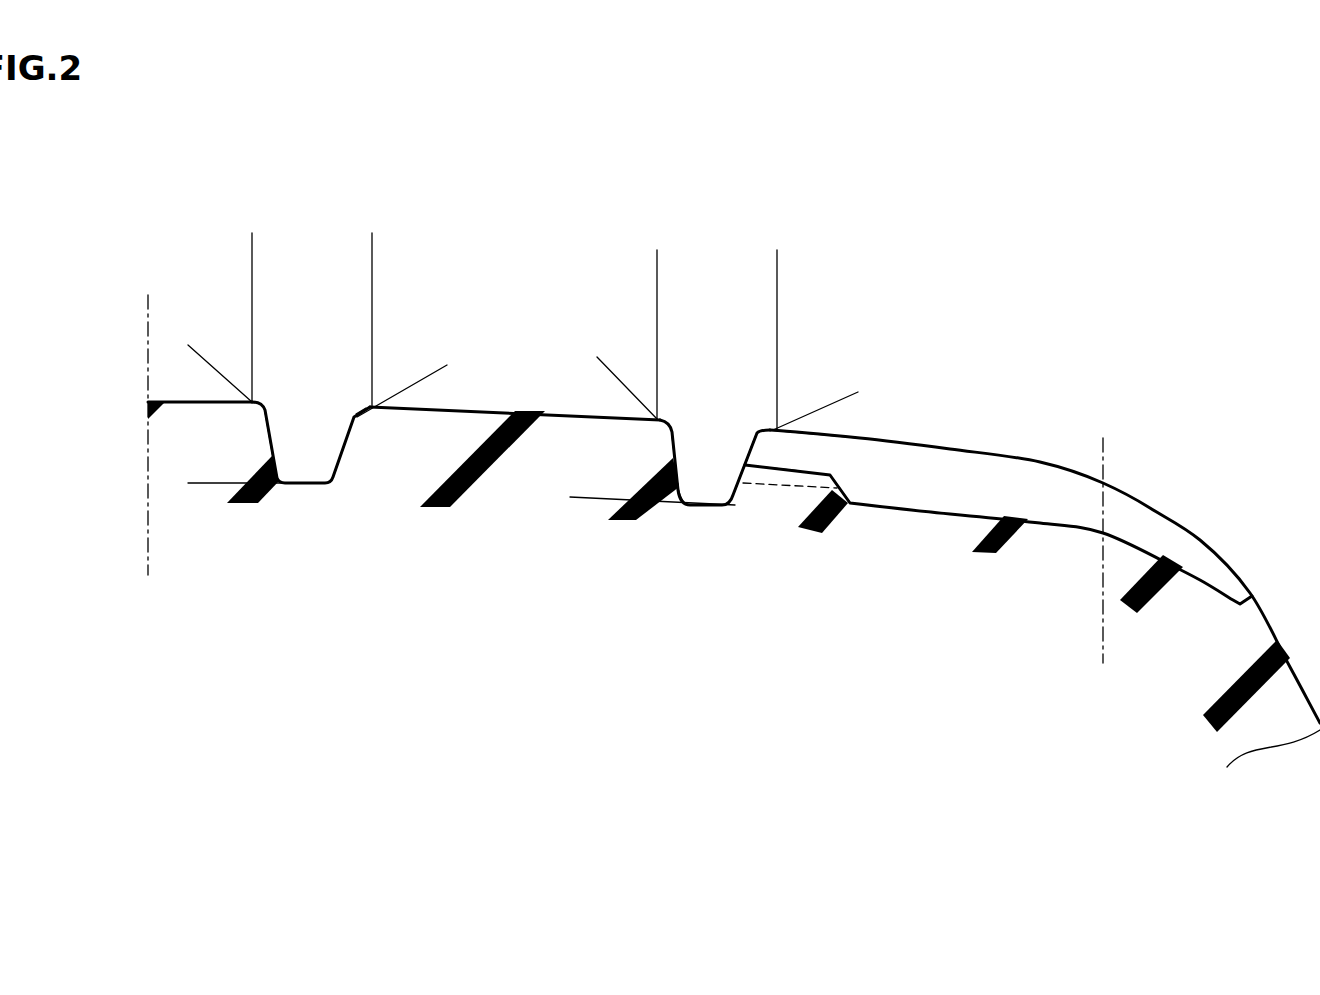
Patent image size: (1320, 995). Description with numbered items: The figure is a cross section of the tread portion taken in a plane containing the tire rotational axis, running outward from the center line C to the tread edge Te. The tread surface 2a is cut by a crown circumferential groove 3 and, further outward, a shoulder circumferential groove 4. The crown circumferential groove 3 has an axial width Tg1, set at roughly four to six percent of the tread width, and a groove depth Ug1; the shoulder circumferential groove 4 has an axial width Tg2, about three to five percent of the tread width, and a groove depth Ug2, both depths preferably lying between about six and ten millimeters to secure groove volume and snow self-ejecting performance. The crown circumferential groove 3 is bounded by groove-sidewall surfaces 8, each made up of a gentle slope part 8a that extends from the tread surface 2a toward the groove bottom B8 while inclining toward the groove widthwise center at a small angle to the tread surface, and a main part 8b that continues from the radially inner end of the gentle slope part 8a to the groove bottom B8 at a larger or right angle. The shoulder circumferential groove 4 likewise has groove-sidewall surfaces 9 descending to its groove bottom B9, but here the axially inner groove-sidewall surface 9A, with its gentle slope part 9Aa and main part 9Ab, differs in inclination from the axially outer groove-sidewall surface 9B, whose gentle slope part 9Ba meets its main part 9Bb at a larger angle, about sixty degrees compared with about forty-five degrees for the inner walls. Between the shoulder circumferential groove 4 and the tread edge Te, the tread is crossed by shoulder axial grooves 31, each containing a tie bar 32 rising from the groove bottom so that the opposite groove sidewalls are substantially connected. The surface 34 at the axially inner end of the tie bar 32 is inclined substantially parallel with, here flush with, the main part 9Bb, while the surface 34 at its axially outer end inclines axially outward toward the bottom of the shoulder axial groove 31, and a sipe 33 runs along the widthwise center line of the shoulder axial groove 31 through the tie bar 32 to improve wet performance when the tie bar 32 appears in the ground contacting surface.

The center line C is at (148, 421).
The tread surface 2a is at (500, 407).
The crown circumferential groove 3 is at (315, 433).
The shoulder circumferential groove 4 is at (715, 462).
The groove-sidewall surfaces 8 is at (188, 628).
The gentle slope part 8a is at (358, 412).
The main part 8b is at (292, 484).
The groove bottom B8 is at (333, 478).
The groove-sidewall surfaces 9 is at (608, 714).
The axially inner groove-sidewall surface 9A is at (563, 668).
The gentle slope part 9Aa is at (670, 445).
The main part 9Ab is at (690, 506).
The axially outer groove-sidewall surface 9B is at (722, 668).
The gentle slope part 9Ba is at (750, 468).
The main part 9Bb is at (733, 505).
The bottom of second groove B9 is at (724, 512).
The shoulder axial grooves 31 is at (1022, 482).
The tie bar 32 is at (807, 468).
The sipe 33 is at (782, 466).
The surface of the end of the tie bar 34 is at (840, 483).
The tread edge Te is at (1100, 537).
The axial width of the crown circumferential groove Tg1 is at (252, 237).
The axial width of the shoulder circumferential groove Tg2 is at (657, 257).
The groove depth of the crown circumferential groove Ug1 is at (193, 402).
The groove depth of the shoulder circumferential groove Ug2 is at (585, 383).